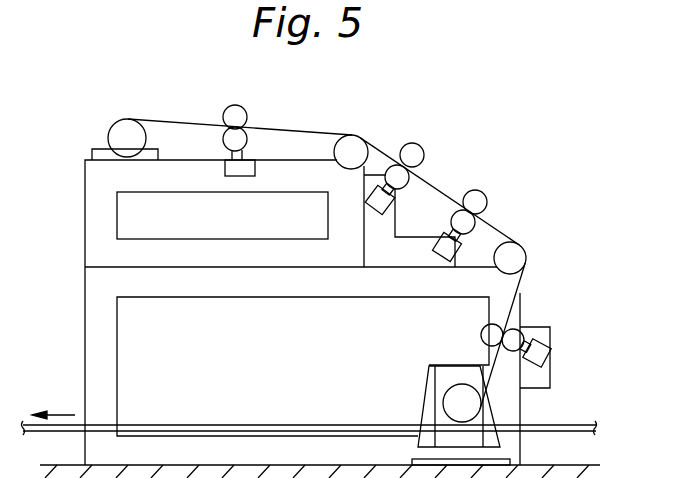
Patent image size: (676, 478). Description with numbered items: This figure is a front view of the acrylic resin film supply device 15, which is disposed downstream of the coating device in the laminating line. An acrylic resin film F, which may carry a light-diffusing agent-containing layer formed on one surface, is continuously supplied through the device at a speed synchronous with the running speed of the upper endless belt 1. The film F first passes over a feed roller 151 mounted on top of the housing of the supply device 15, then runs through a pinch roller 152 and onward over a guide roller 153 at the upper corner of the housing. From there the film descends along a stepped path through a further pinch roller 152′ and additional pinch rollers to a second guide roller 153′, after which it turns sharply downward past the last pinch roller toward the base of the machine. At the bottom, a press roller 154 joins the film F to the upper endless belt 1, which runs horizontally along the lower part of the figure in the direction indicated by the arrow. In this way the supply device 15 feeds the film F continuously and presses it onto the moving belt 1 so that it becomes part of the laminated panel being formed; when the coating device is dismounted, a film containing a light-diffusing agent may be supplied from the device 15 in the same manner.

The upper endless belt 1 is at (158, 424).
The acrylic resin film supply device 15 is at (292, 359).
The feed roller 151 is at (126, 119).
The pinch roller 152 is at (238, 106).
The acrylic resin film F is at (318, 132).
The guide roller 153 is at (356, 145).
The pinch roller 152′ is at (418, 153).
The guide roller 153′ is at (513, 259).
The press roller 154 is at (470, 403).